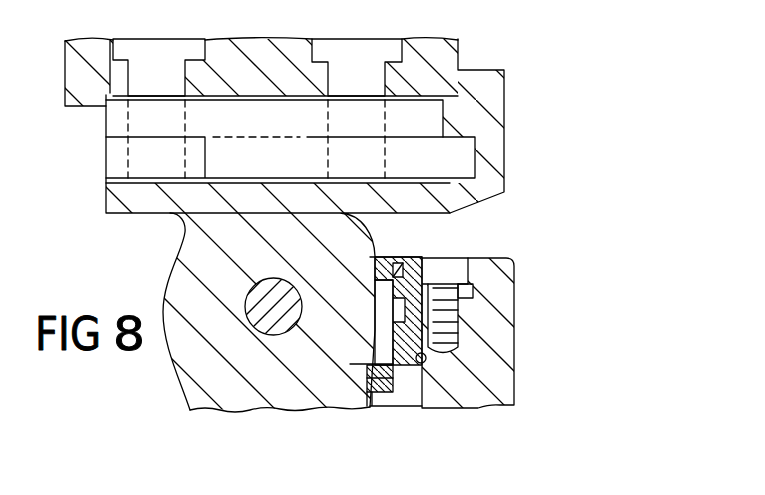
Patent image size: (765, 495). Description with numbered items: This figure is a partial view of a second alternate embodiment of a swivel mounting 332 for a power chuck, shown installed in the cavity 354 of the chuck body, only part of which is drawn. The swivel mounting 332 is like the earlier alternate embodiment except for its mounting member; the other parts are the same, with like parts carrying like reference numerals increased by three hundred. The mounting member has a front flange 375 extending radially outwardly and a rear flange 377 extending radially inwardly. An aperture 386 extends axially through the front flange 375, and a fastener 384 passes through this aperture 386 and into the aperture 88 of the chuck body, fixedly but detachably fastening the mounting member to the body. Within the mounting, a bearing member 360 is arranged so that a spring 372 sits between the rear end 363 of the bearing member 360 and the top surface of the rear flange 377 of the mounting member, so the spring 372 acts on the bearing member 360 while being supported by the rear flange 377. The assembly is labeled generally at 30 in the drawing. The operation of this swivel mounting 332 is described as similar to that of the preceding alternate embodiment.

The housing assembly 30 is at (525, 93).
The bearing member 360 is at (428, 249).
The swivel mounting 332 is at (390, 257).
The fastener 384 is at (467, 258).
The front flange 375 is at (448, 270).
The aperture 386 is at (472, 292).
The aperture 88 is at (458, 332).
The cavity 354 is at (426, 358).
The spring 372 is at (350, 343).
The rear flange 377 is at (470, 428).
The rear end 363 is at (373, 394).